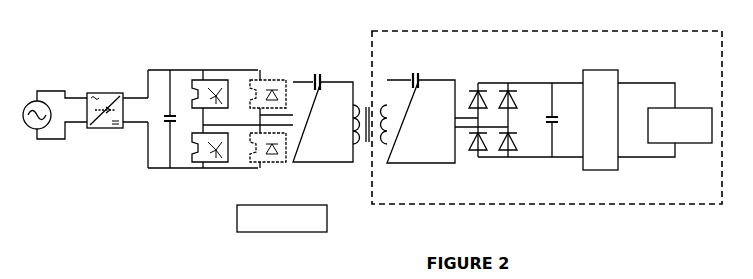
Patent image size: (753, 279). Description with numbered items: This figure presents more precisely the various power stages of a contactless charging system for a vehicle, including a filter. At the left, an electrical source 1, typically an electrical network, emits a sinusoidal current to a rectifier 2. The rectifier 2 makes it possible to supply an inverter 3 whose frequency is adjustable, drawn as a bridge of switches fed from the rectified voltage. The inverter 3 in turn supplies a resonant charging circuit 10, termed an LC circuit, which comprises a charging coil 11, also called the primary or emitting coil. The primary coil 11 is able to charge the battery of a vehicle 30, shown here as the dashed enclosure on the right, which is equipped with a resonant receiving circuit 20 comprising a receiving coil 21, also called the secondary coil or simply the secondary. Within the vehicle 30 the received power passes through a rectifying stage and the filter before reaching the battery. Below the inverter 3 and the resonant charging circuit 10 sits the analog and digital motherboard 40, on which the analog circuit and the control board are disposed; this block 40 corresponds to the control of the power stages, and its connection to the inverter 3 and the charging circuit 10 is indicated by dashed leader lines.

The electrical source 1 is at (43, 150).
The rectifier 2 is at (104, 132).
The inverter 3 is at (222, 172).
The resonant charging circuit 10 is at (338, 172).
The charging coil 11 is at (345, 125).
The resonant receiving circuit 20 is at (428, 172).
The receiving coil 21 is at (395, 125).
The vehicle 30 is at (547, 117).
The analog and digital motherboard 40 is at (322, 162).